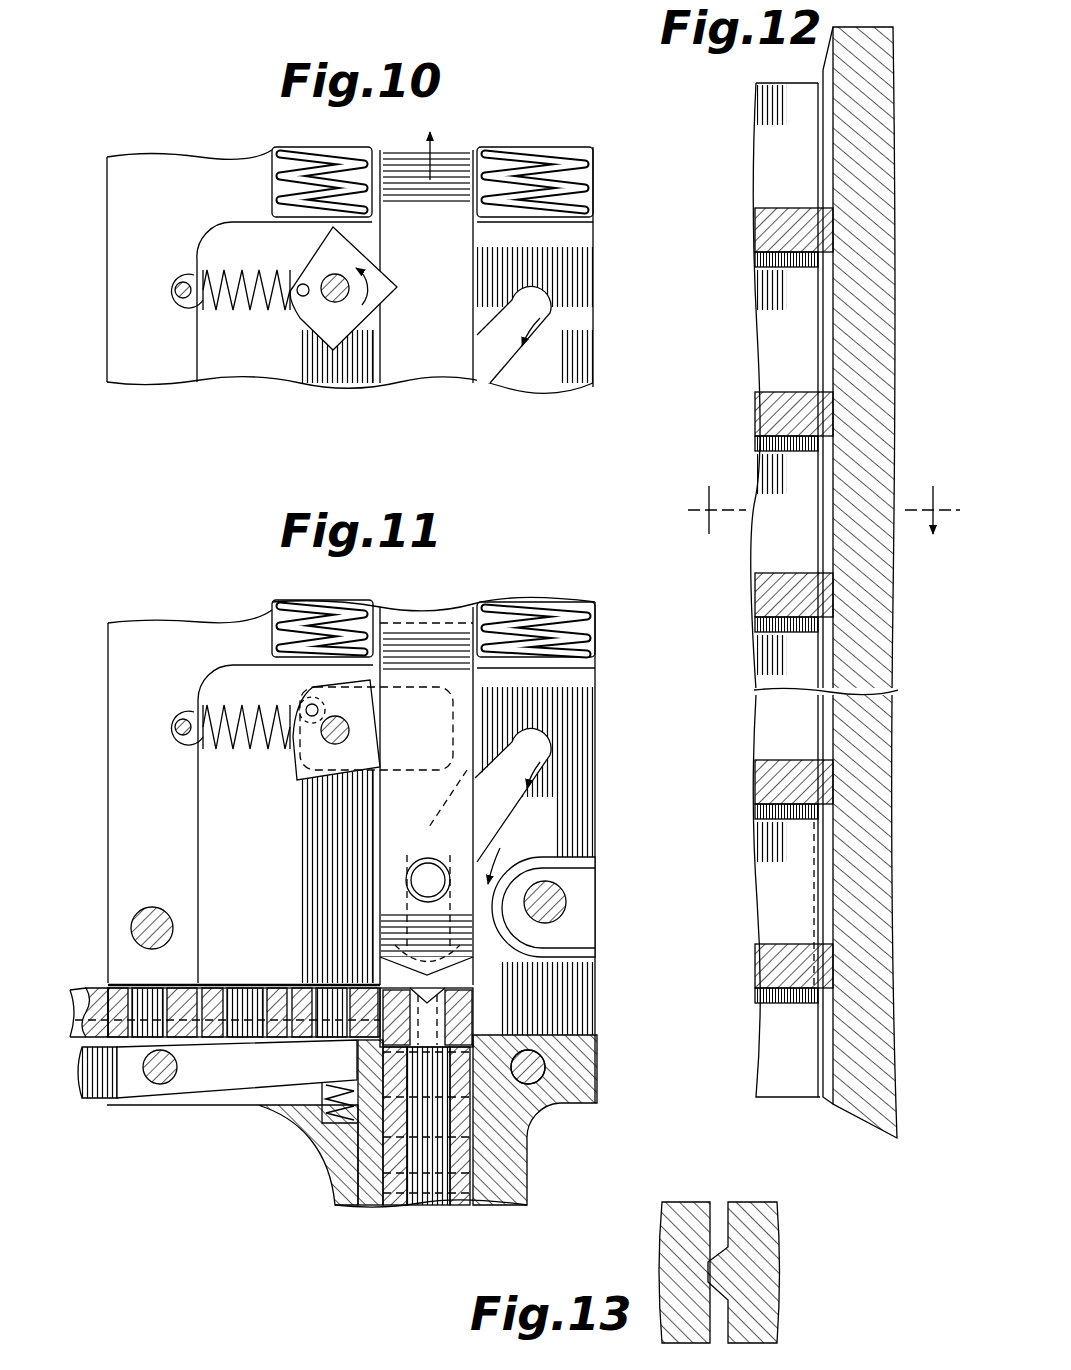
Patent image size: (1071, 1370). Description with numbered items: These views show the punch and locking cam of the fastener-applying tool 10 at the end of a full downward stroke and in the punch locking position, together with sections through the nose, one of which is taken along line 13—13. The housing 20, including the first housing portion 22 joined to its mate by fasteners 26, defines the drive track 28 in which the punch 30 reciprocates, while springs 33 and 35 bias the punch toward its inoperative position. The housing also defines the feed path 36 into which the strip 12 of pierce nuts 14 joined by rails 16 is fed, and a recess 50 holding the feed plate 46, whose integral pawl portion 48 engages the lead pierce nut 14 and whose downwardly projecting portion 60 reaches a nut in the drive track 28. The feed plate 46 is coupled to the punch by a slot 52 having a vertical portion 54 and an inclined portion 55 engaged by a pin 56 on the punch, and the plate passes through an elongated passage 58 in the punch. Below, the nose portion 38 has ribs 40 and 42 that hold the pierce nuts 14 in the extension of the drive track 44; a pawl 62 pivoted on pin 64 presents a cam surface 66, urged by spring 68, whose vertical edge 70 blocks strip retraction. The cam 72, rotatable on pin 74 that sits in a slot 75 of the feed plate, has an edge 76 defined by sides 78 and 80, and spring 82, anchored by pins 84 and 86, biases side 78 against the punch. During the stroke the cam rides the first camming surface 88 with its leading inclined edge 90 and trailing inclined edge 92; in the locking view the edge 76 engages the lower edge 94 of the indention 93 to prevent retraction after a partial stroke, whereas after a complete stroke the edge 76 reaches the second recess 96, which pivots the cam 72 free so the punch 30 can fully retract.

In FIG. 10, the tool 10 is at (166, 114).
In FIG. 11, the tool 10 is at (173, 1222).
In FIG. 11, the strip of pierce nuts 12 is at (80, 992).
In FIG. 11, the pierce nut 14 is at (480, 1040).
In FIG. 12, the pierce nut 14 is at (757, 165).
In FIG. 13, the pierce nut 14 is at (662, 1258).
In FIG. 11, the rails 16 is at (82, 1073).
In FIG. 10, the housing 20 is at (138, 150).
In FIG. 11, the housing 20 is at (168, 620).
In FIG. 10, the first housing portion 22 is at (107, 174).
In FIG. 11, the first housing portion 22 is at (108, 636).
In FIG. 11, the fasteners 26 is at (560, 905).
In FIG. 11, the drive track 28 is at (535, 858).
In FIG. 10, the punch 30 is at (435, 383).
In FIG. 11, the punch 30 is at (440, 606).
In FIG. 10, the spring 33 is at (540, 150).
In FIG. 11, the spring 33 is at (548, 608).
In FIG. 10, the spring 35 is at (293, 150).
In FIG. 11, the spring 35 is at (293, 608).
In FIG. 11, the feed path 36 is at (108, 985).
In FIG. 11, the nose portion 38 is at (333, 1200).
In FIG. 12, the nose portion 38 is at (897, 406).
In FIG. 13, the nose portion 38 is at (782, 1244).
In FIG. 11, the rib 40 is at (458, 1208).
In FIG. 12, the rib 40 is at (812, 656).
In FIG. 13, the rib 40 is at (722, 1312).
In FIG. 11, the rib 42 is at (392, 1205).
In FIG. 11, the extension of the drive track 44 is at (428, 1212).
In FIG. 12, the extension of the drive track 44 is at (787, 1064).
In FIG. 13, the extension of the drive track 44 is at (718, 1214).
In FIG. 10, the feed plate 46 is at (300, 365).
In FIG. 11, the feed plate 46 is at (298, 890).
In FIG. 11, the pawl portion 48 is at (450, 990).
In FIG. 10, the recess 50 is at (200, 370).
In FIG. 11, the recess 50 is at (198, 828).
In FIG. 10, the slot 52 is at (545, 320).
In FIG. 11, the slot 52 is at (545, 762).
In FIG. 11, the vertical portion 54 is at (392, 918).
In FIG. 10, the inclined portion 55 is at (530, 298).
In FIG. 11, the inclined portion 55 is at (528, 748).
In FIG. 11, the pin 56 is at (440, 878).
In FIG. 11, the elongated passage 58 is at (403, 615).
In FIG. 11, the downwardly projecting portion 60 is at (592, 1034).
In FIG. 11, the pawl 62 is at (218, 1100).
In FIG. 11, the pin 64 is at (158, 1085).
In FIG. 11, the cam surface 66 is at (340, 1032).
In FIG. 11, the spring 68 is at (338, 1125).
In FIG. 11, the vertical edge 70 is at (375, 990).
In FIG. 10, the cam 72 is at (320, 340).
In FIG. 11, the cam 72 is at (293, 757).
In FIG. 10, the pin 74 is at (305, 322).
In FIG. 11, the pin 74 is at (335, 745).
In FIG. 10, the slot 75 is at (376, 345).
In FIG. 11, the slot 75 is at (452, 735).
In FIG. 10, the edge 76 is at (400, 292).
In FIG. 11, the edge 76 is at (385, 772).
In FIG. 10, the side 78 is at (332, 386).
In FIG. 11, the side 78 is at (330, 785).
In FIG. 10, the side 80 is at (385, 240).
In FIG. 11, the side 80 is at (385, 680).
In FIG. 10, the spring 82 is at (197, 236).
In FIG. 11, the spring 82 is at (197, 685).
In FIG. 10, the pin 84 is at (175, 290).
In FIG. 11, the pin 84 is at (175, 727).
In FIG. 10, the pin 86 is at (300, 283).
In FIG. 11, the pin 86 is at (306, 705).
In FIG. 11, the first camming surface 88 is at (405, 848).
In FIG. 11, the leading inclined edge 90 is at (392, 865).
In FIG. 11, the trailing inclined edge 92 is at (382, 828).
In FIG. 10, the indention 93 is at (383, 326).
In FIG. 11, the indention 93 is at (382, 745).
In FIG. 10, the lower edge 94 is at (392, 352).
In FIG. 11, the lower edge 94 is at (383, 762).
In FIG. 10, the second recess 96 is at (397, 276).
In FIG. 11, the second recess 96 is at (392, 698).
In FIG. 12, the section line 13- 13 is at (824, 530).